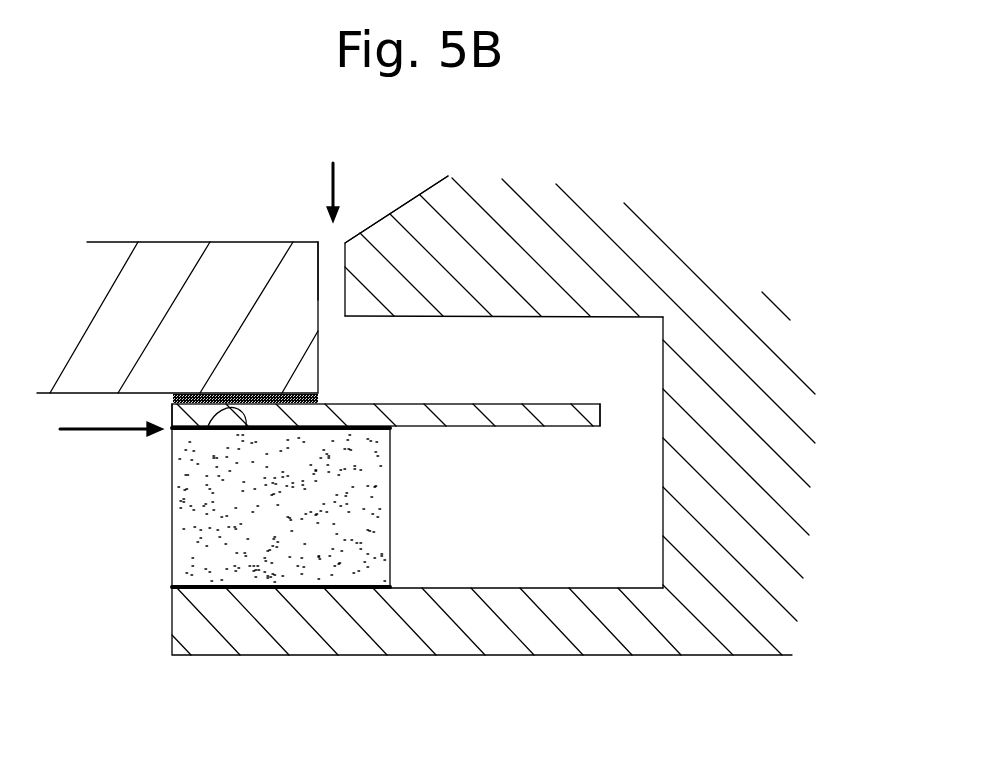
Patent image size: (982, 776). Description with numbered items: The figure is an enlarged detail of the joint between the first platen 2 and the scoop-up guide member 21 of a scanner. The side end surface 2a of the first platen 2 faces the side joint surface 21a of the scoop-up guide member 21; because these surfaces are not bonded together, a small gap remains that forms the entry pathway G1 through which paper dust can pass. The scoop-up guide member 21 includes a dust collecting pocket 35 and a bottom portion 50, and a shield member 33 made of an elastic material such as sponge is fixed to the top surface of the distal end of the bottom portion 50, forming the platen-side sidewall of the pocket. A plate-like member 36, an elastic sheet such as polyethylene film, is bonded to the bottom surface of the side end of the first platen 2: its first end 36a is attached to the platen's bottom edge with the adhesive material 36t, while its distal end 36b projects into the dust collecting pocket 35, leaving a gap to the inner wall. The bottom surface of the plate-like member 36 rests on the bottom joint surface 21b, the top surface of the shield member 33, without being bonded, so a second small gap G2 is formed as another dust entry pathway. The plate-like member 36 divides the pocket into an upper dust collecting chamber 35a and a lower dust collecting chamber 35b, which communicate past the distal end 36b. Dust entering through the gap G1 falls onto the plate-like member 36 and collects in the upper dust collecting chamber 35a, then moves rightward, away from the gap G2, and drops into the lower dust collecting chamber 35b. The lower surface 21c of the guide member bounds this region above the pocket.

The first platen 2 is at (150, 252).
The side end surface 2a is at (318, 300).
The scoop-up guide member 21 is at (482, 237).
The side joint surface 21a is at (345, 262).
The bottom joint surface 21b is at (208, 426).
The bottom surface of holder 21c is at (368, 318).
The shield member 33 is at (197, 548).
The dust collecting pocket 35 is at (647, 382).
The upper dust collecting chamber 35a is at (583, 357).
The lower dust collecting chamber 35b is at (587, 572).
The plate-like member 36 is at (437, 410).
The first end 36a is at (186, 430).
The distal end 36b is at (597, 428).
The adhesive material 36t is at (165, 402).
The bottom portion 50 is at (379, 628).
The entry pathway G1 is at (333, 176).
The gap G2 is at (93, 431).